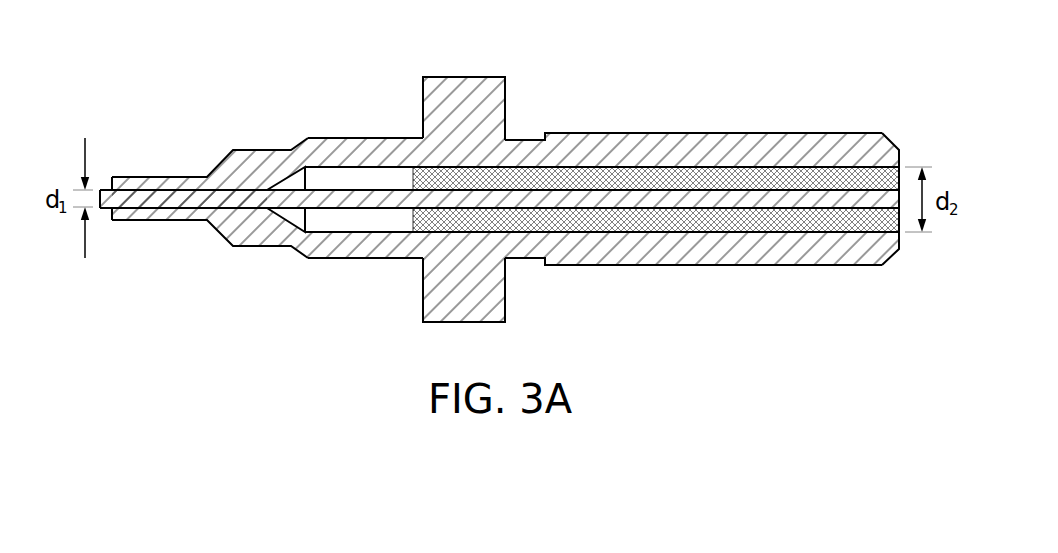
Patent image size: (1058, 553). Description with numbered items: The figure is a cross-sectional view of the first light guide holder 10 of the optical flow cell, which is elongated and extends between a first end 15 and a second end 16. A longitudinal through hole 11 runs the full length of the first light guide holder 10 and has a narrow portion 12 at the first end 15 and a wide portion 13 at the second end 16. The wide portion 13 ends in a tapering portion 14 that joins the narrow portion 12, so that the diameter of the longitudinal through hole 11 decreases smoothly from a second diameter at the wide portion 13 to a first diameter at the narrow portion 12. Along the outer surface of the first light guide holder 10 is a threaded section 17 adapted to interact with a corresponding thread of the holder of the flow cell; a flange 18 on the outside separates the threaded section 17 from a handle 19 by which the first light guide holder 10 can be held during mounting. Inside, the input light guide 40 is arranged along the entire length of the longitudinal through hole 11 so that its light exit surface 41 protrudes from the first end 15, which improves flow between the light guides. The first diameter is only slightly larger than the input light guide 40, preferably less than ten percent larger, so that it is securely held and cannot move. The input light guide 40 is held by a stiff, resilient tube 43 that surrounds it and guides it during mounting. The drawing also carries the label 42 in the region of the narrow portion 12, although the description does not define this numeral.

The first light guide holder 10 is at (757, 78).
The longitudinal through hole 11 is at (369, 226).
The narrow portion 12 is at (133, 177).
The wide portion 13 is at (869, 244).
The tapering portion 14 is at (277, 171).
The first end 15 is at (100, 122).
The second end 16 is at (906, 130).
The threaded section 17 is at (365, 138).
The flange 18 is at (470, 77).
The handle 19 is at (652, 133).
The input light guide 40 is at (150, 197).
The light exit surface 41 is at (96, 212).
The ferrule 42 is at (226, 224).
The tube 43 is at (727, 224).